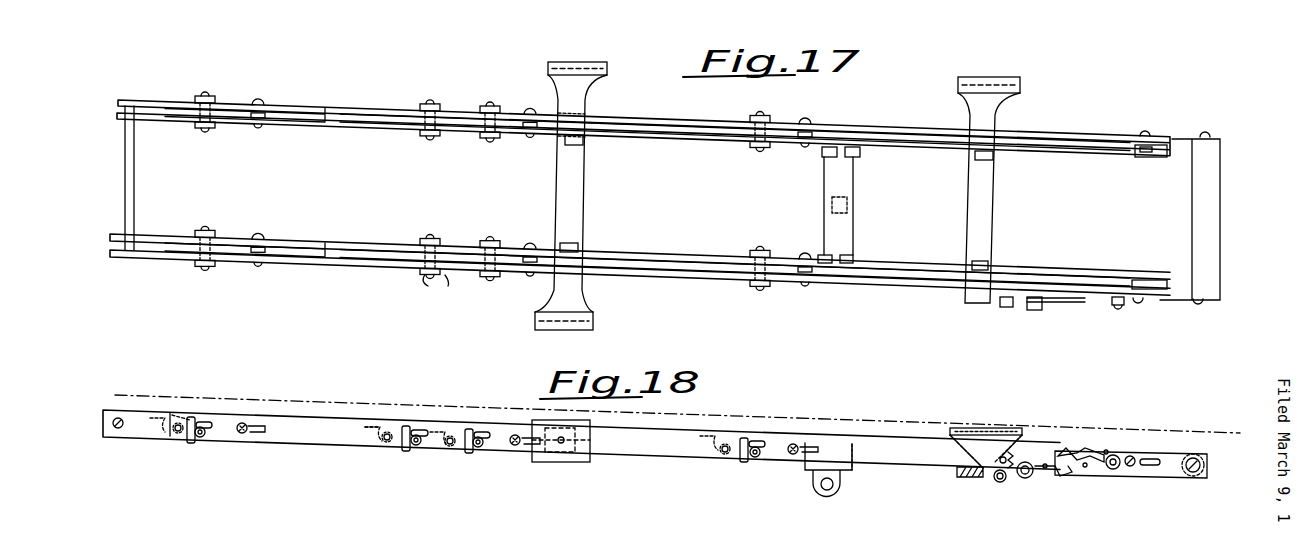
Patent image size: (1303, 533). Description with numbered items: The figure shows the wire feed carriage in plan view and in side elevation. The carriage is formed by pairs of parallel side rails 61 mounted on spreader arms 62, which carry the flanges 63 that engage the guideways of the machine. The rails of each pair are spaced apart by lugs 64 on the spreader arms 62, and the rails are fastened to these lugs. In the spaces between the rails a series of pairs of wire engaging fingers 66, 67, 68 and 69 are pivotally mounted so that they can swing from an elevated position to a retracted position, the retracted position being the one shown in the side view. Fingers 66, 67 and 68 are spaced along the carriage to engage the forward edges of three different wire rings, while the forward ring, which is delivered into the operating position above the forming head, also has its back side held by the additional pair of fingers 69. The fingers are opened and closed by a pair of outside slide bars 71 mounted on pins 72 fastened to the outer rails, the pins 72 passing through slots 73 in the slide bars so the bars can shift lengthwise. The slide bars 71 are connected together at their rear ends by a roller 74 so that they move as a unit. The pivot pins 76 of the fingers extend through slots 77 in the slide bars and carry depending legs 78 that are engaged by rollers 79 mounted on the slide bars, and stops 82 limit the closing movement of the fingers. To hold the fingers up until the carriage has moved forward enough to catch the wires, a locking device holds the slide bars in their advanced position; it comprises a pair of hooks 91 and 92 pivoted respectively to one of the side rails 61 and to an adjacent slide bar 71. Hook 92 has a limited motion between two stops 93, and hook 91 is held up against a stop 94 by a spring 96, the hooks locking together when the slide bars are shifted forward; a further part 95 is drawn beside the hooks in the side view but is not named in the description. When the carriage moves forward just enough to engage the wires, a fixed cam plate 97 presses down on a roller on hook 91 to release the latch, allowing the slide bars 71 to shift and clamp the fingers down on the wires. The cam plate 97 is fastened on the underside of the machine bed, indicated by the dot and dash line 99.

In FIG. 17, the side rails 61 is at (670, 130).
In FIG. 17, the spreader arms 62 is at (582, 187).
In FIG. 17, the flanges 63 is at (1020, 85).
In FIG. 17, the lugs 64 is at (585, 137).
In FIG. 17, the wire engaging fingers 66 is at (192, 118).
In FIG. 18, the wire engaging fingers 66 is at (172, 413).
In FIG. 17, the wire engaging fingers 67 is at (458, 128).
In FIG. 18, the wire engaging fingers 67 is at (450, 430).
In FIG. 17, the wire engaging fingers 68 is at (738, 133).
In FIG. 18, the wire engaging fingers 68 is at (725, 440).
In FIG. 17, the additional fingers 69 is at (392, 125).
In FIG. 18, the additional fingers 69 is at (385, 425).
In FIG. 17, the slide bars 71 is at (346, 110).
In FIG. 18, the slide bars 71 is at (318, 437).
In FIG. 17, the pins 72 is at (1148, 133).
In FIG. 18, the pins 72 is at (243, 435).
In FIG. 18, the slots 73 is at (258, 433).
In FIG. 17, the roller 74 is at (1210, 217).
In FIG. 18, the roller 74 is at (1195, 478).
In FIG. 17, the pivot pins 76 is at (420, 278).
In FIG. 18, the slots 77 is at (205, 425).
In FIG. 18, the depending legs 78 is at (406, 452).
In FIG. 17, the rollers 79 is at (436, 278).
In FIG. 18, the rollers 79 is at (420, 447).
In FIG. 18, the stops 82 is at (377, 449).
In FIG. 17, the hook 91 is at (1057, 306).
In FIG. 18, the hook 91 is at (1045, 480).
In FIG. 17, the hook 92 is at (1096, 303).
In FIG. 18, the hook 92 is at (1078, 455).
In FIG. 17, the stops 93 is at (1025, 308).
In FIG. 18, the stops 93 is at (1108, 452).
In FIG. 18, the stop 94 is at (1045, 464).
In FIG. 18, the roller 95 is at (1003, 482).
In FIG. 18, the spring 96 is at (1022, 460).
In FIG. 18, the cam plate 97 is at (975, 430).
In FIG. 18, the dot and dash line 99 is at (1193, 432).